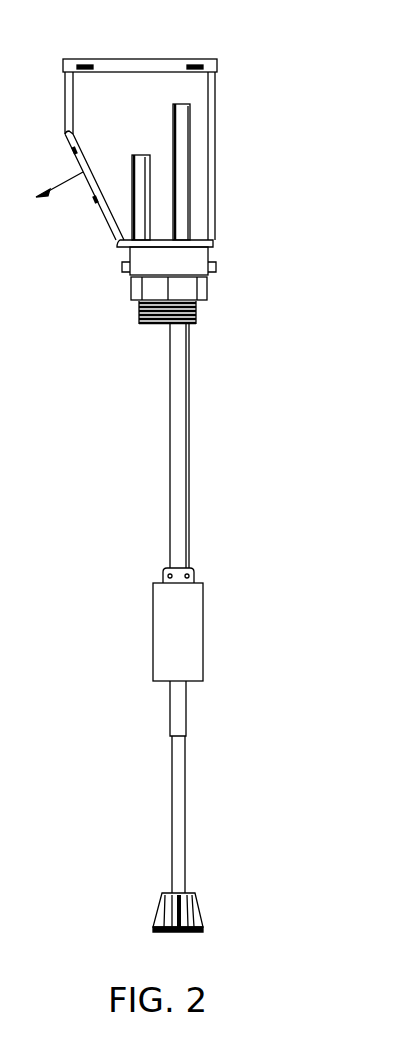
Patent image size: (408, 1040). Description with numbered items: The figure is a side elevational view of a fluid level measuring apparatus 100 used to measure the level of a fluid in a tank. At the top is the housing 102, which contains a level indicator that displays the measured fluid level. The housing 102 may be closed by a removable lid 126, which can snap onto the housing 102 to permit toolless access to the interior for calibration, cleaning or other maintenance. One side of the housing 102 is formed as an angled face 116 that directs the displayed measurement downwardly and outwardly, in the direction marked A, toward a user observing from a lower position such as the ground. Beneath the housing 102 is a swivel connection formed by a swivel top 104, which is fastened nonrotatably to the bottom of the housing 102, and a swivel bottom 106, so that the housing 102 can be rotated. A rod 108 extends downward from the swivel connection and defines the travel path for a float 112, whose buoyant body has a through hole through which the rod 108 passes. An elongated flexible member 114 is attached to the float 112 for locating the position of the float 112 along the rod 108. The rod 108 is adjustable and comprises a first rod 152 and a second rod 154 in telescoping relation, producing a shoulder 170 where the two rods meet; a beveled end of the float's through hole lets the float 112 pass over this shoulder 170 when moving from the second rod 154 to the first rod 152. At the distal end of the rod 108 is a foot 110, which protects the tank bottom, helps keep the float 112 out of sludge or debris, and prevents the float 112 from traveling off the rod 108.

The fluid level measuring apparatus 100 is at (225, 380).
The housing 102 is at (238, 78).
The swivel top 104 is at (208, 256).
The swivel bottom 106 is at (208, 298).
The rod 108 is at (170, 507).
The foot 110 is at (197, 907).
The float 112 is at (203, 633).
The elongated flexible member 114 is at (188, 512).
The angled face 116 is at (108, 228).
The lid 126 is at (133, 58).
The first rod 152 is at (170, 428).
The second rod 154 is at (172, 808).
The shoulder 170 is at (186, 737).